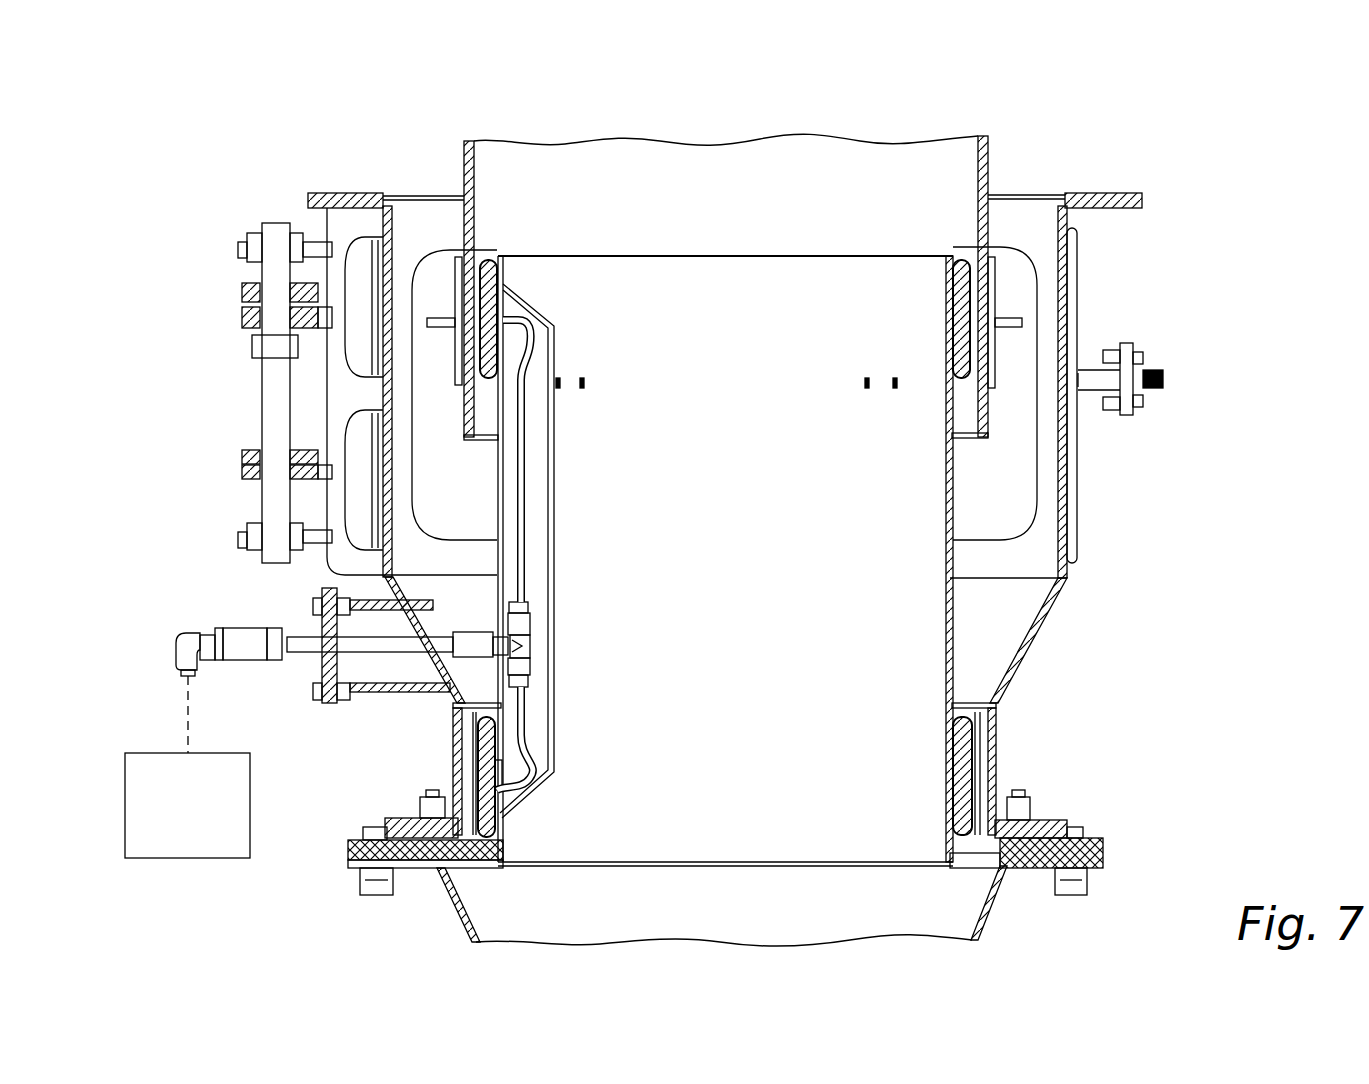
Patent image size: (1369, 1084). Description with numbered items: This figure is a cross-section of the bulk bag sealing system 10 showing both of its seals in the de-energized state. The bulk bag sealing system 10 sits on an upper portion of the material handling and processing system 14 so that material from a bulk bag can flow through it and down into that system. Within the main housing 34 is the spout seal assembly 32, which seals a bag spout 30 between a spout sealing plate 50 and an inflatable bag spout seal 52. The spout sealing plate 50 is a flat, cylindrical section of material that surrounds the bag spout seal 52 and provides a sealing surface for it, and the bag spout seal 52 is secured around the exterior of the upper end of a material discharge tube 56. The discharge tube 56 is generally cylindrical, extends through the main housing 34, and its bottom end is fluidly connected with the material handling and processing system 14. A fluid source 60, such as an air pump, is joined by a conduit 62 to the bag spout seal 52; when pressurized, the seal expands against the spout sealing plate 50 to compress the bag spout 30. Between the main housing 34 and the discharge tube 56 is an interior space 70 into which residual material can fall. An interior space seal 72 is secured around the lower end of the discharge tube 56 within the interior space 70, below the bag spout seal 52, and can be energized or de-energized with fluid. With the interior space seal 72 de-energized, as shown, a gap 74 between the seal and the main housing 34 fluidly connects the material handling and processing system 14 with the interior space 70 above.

The bulk bag sealing system 10 is at (213, 178).
The material handling and processing system 14 is at (462, 915).
The bag spout 30 is at (982, 152).
The spout seal assembly 32 is at (1006, 224).
The main housing 34 is at (1052, 598).
The spout sealing plate 50 is at (458, 265).
The bag spout seal 52 is at (488, 262).
The material discharge tube 56 is at (952, 638).
The fluid source 60 is at (128, 782).
The conduit 62 is at (300, 640).
The interior space 70 is at (470, 682).
The interior space seal 72 is at (468, 718).
The gap 74 is at (474, 787).